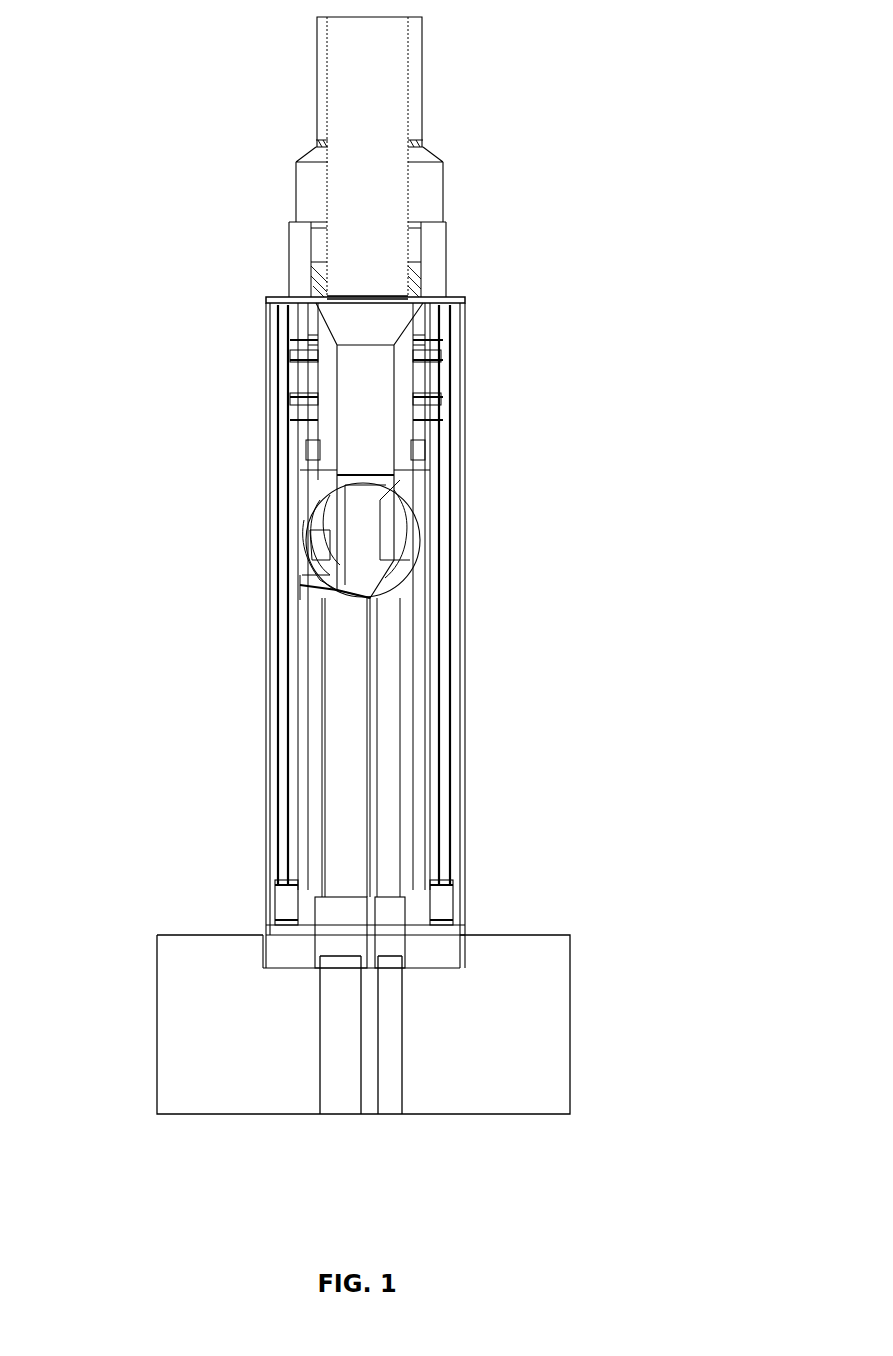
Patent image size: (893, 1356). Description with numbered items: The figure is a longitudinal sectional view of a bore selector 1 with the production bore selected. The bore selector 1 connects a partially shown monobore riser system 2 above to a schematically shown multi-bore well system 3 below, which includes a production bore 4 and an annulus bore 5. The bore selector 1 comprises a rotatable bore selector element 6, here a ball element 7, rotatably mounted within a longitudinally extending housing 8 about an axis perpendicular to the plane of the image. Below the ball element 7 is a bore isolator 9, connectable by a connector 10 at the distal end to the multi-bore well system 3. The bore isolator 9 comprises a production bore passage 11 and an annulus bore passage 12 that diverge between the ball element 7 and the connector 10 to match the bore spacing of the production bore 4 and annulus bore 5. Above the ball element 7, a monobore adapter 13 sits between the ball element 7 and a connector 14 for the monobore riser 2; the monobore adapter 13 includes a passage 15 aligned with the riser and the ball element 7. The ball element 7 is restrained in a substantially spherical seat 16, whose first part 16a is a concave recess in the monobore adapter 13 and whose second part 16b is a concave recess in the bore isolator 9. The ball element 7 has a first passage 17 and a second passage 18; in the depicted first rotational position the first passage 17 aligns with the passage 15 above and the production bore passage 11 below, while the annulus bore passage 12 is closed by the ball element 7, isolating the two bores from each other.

The bore selector 1 is at (113, 206).
The monobore riser system 2 is at (322, 66).
The multi-bore well system 3 is at (182, 1045).
The production bore 4 is at (342, 1082).
The annulus bore 5 is at (393, 1088).
The rotatable bore selector element 6 is at (350, 557).
The ball element 7 is at (330, 560).
The housing 8 is at (272, 783).
The bore isolator 9 is at (414, 741).
The connector 10 is at (228, 907).
The production bore passage 11 is at (345, 713).
The annulus bore passage 12 is at (394, 681).
The monobore adapter 13 is at (325, 410).
The connector 14 is at (322, 286).
The passage 15 is at (373, 380).
The seat 16 is at (477, 497).
The first part of the seat 16a is at (335, 478).
The second part of the seat 16b is at (322, 577).
The first passage 17 is at (350, 517).
The second passage 18 is at (405, 540).